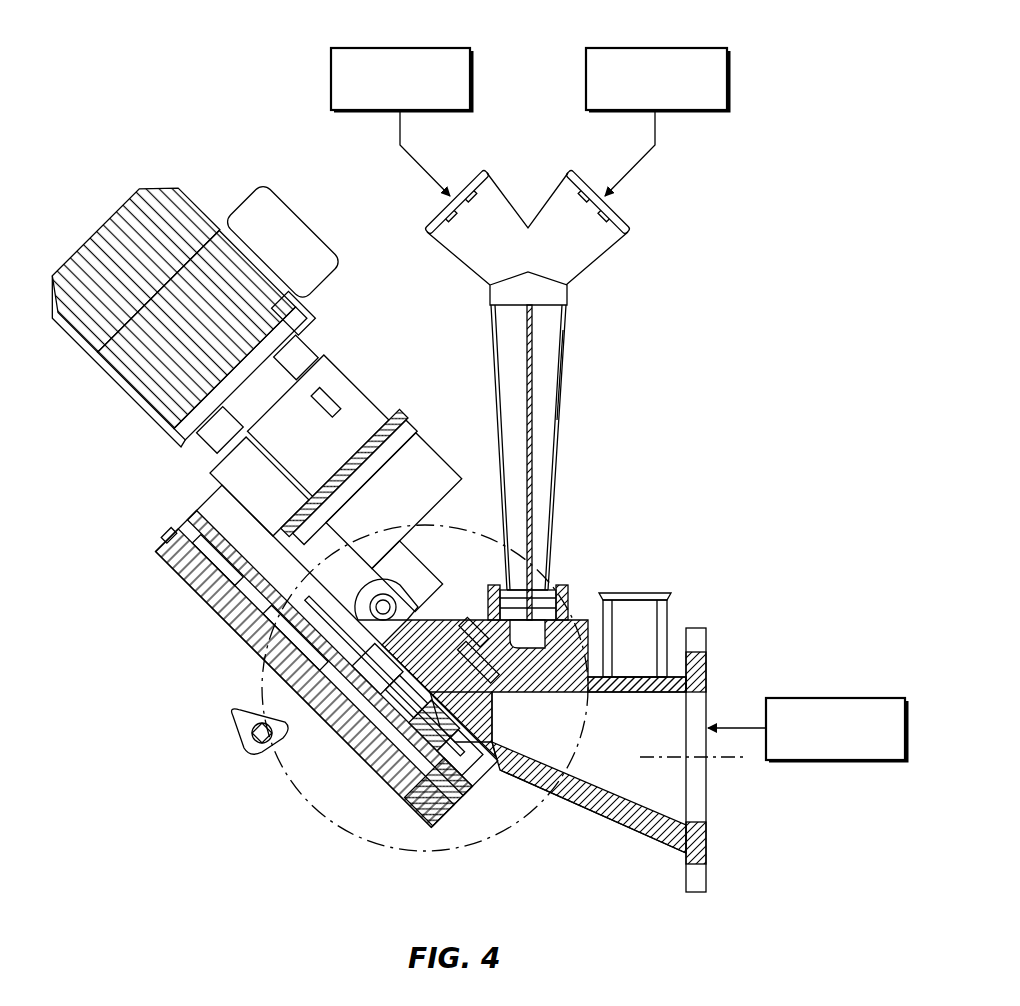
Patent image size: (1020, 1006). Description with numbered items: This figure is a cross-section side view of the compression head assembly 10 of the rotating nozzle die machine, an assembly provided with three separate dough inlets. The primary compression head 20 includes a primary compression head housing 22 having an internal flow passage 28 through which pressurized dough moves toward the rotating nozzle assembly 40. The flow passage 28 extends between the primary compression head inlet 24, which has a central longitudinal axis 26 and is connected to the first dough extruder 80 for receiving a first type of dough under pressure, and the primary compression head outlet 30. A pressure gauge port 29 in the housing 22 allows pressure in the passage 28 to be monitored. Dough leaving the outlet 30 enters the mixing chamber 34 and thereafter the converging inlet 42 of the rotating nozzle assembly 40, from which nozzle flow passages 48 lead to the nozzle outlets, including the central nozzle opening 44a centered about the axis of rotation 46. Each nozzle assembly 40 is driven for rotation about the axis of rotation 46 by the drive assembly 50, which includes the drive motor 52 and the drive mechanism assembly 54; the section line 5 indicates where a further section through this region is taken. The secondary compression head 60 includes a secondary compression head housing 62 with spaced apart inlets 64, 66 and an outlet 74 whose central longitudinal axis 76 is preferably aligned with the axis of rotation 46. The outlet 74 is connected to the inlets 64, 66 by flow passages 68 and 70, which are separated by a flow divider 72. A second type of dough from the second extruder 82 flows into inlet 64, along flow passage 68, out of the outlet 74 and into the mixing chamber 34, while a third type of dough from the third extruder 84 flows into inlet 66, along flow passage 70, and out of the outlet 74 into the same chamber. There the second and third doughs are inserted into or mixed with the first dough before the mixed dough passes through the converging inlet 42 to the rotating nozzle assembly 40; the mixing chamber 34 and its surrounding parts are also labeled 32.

The section line 5- 5 is at (286, 752).
The compression head assembly 10 is at (725, 422).
The primary compression head 20 is at (592, 824).
The primary compression head housing 22 is at (650, 838).
The primary compression head inlet 24 is at (707, 800).
The central longitudinal axis 26 is at (713, 760).
The primary compression head flow passage 28 is at (667, 712).
The pressure gauge port 29 is at (633, 593).
The primary compression head outlet 30 is at (494, 728).
The shaft 32 is at (312, 724).
The mixing chamber 34 is at (430, 613).
The rotating nozzle assembly 40 is at (452, 818).
The converging inlet 42 is at (493, 706).
The central nozzle opening 44a is at (377, 787).
The axis of rotation 46 is at (312, 763).
The nozzle flow passages 48 is at (372, 763).
The drive assembly 50 is at (160, 560).
The drive motor 52 is at (100, 238).
The drive mechanism assembly 54 is at (215, 620).
The secondary compression head 60 is at (572, 390).
The secondary compression head housing 62 is at (553, 440).
The inlet 64 is at (437, 220).
The inlet 66 is at (618, 220).
The flow passage 68 is at (510, 345).
The flow passage 70 is at (548, 345).
The flow divider 72 is at (533, 492).
The secondary compression head housing outlet 74 is at (461, 622).
The central longitudinal axis 76 is at (340, 817).
The first dough extruder 80 is at (837, 697).
The second extruder 82 is at (362, 47).
The third extruder 84 is at (618, 47).